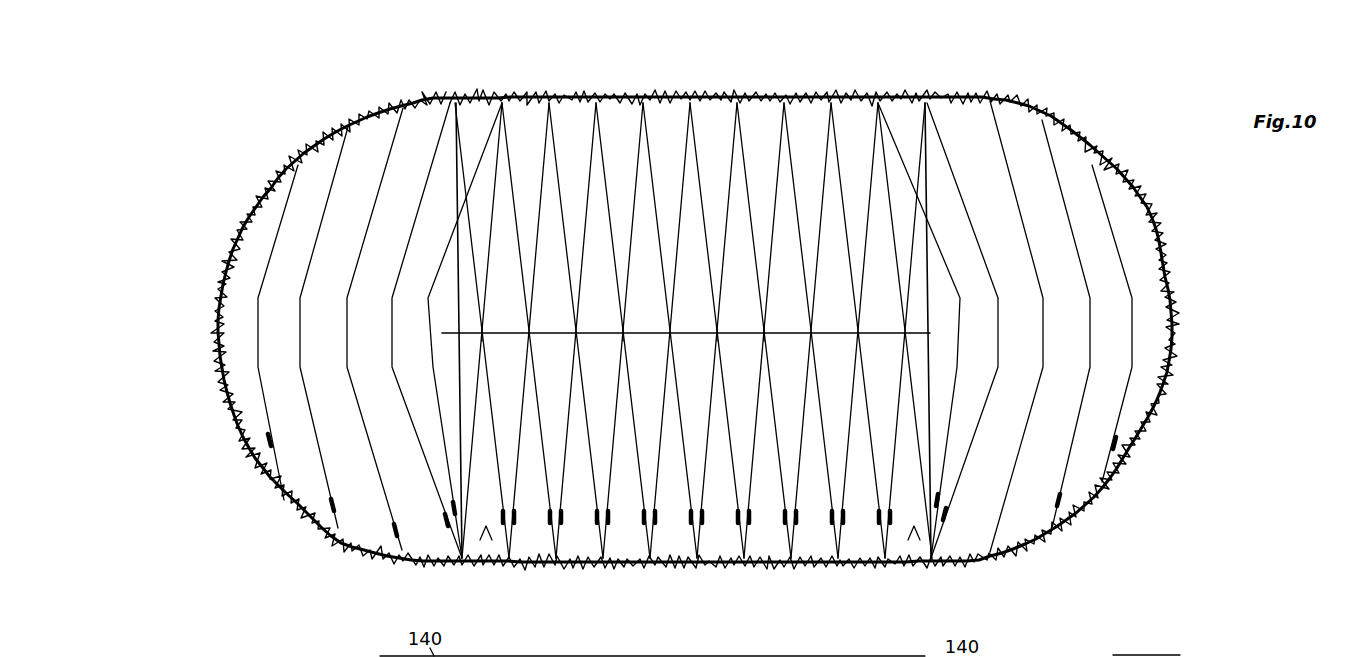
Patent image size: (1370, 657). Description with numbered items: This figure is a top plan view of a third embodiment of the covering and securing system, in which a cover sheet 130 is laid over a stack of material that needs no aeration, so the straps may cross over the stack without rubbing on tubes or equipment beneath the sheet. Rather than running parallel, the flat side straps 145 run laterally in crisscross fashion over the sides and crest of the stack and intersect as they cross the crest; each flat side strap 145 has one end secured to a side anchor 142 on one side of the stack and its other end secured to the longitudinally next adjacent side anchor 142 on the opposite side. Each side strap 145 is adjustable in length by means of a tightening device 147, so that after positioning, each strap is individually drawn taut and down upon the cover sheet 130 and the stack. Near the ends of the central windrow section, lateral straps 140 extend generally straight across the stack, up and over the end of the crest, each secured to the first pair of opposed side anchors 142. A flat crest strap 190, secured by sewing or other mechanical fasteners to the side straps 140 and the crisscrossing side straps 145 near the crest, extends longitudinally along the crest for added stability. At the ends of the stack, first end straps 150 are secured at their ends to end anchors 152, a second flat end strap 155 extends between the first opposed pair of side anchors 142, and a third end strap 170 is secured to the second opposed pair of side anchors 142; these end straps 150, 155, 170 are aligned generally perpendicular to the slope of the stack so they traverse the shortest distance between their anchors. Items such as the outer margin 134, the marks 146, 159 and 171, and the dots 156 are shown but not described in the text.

The cover sheet 130 is at (667, 126).
The outer edge 134 is at (234, 242).
The lateral straps 140 is at (693, 330).
The side anchor 142 is at (501, 97).
The flat side straps 145 is at (572, 285).
The anchor dot 146 is at (453, 502).
The tightening device 147 is at (548, 514).
The first end straps 150 is at (283, 246).
The end anchors 152 is at (291, 160).
The second flat end strap 155 is at (372, 252).
The side strand anchor dots 156 is at (273, 442).
The anchor dot 159 is at (444, 524).
The third end strap 170 is at (441, 262).
The small loop 171 is at (691, 543).
The flat crest strap 190 is at (637, 330).